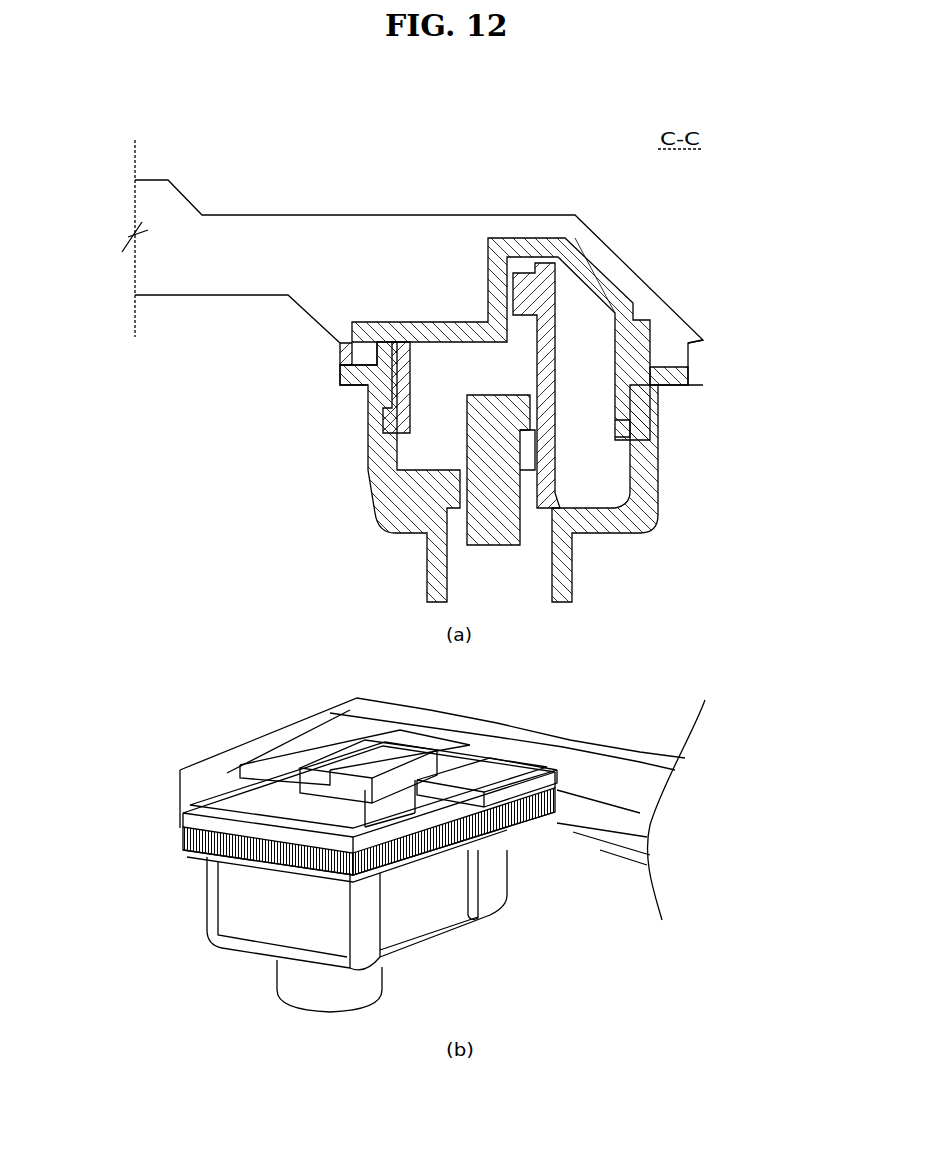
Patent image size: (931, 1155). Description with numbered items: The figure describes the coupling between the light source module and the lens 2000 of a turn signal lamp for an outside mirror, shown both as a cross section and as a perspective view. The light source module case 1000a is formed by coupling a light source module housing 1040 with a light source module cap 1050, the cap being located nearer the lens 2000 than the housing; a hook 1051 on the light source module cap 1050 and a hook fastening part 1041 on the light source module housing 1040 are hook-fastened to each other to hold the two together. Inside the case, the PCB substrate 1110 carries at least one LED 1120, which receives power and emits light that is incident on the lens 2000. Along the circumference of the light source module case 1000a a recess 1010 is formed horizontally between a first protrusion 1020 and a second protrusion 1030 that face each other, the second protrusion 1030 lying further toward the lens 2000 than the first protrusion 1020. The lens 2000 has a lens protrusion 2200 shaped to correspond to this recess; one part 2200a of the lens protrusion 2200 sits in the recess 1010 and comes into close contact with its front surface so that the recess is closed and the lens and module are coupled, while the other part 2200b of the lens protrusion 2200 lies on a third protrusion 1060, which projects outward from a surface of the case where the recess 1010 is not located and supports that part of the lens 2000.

The lens 2000 is at (398, 236).
The LED 1120 is at (520, 272).
The light source module cap 1050 is at (593, 270).
The part of the lens protrusion 2200a is at (340, 345).
The other part of the lens protrusion 2200b is at (697, 355).
The lens protrusion 2200 is at (180, 830).
The recess 1010 is at (345, 372).
The first protrusion 1020 is at (365, 395).
The light source module housing 1040 is at (385, 533).
The PCB substrate 1110 is at (560, 500).
The third protrusion 1060 is at (690, 378).
The hook fastening part 1041 is at (660, 410).
The hook 1051 is at (640, 420).
The second protrusion 1030 is at (180, 815).
The light source module case 1000a is at (218, 900).